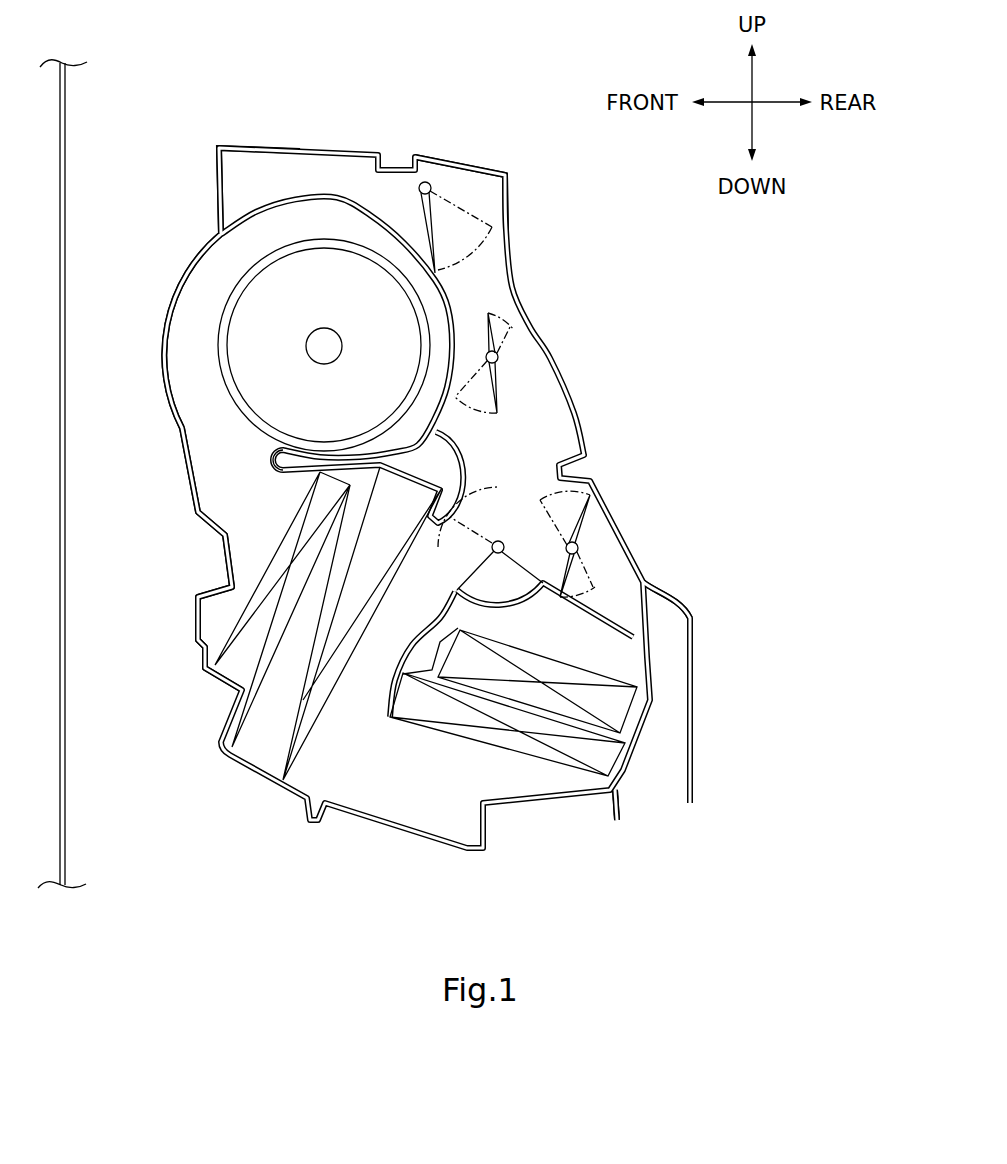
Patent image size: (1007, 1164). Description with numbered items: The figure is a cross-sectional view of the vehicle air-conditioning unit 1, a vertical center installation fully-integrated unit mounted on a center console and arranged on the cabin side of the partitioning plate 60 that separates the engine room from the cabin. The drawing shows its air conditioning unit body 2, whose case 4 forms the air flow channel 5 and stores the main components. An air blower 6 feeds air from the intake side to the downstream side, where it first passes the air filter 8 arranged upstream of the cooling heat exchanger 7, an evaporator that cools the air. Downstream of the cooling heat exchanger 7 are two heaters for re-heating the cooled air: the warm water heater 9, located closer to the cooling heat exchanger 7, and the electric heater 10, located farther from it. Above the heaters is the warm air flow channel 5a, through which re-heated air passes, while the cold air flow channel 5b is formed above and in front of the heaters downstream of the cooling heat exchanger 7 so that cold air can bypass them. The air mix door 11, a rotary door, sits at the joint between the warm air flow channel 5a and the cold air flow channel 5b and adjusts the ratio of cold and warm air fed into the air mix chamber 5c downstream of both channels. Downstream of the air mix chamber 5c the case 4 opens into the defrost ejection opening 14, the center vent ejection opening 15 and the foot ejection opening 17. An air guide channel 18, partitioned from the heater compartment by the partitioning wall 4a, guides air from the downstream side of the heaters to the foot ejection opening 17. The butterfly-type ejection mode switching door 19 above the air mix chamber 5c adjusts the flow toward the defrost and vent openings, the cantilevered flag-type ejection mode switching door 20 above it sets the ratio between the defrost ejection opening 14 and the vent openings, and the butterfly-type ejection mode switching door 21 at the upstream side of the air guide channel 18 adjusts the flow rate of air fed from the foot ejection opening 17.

The vehicle air-conditioning unit 1 is at (534, 281).
The air conditioning unit body 2 is at (168, 398).
The case 4 is at (186, 486).
The partitioning wall 4a is at (685, 612).
The air flow channel 5 is at (222, 493).
The warm air flow channel 5a is at (544, 653).
The cold air flow channel 5b is at (401, 591).
The air mix chamber 5c is at (485, 483).
The air blower 6 is at (217, 290).
The cooling heat exchanger 7 is at (262, 752).
The air filter 8 is at (235, 667).
The warm water heater 9 is at (603, 758).
The electric heater 10 is at (617, 708).
The air mix door 11 is at (588, 606).
The defrost ejection opening 14 is at (223, 167).
The center vent ejection opening 15 is at (502, 203).
The foot ejection opening 17 is at (620, 807).
The air guide channel 18 is at (688, 667).
The ejection mode switching door 19 is at (498, 357).
The ejection mode switching door 20 is at (425, 182).
The ejection mode switching door 21 is at (578, 548).
The partitioning plate 60 is at (67, 128).